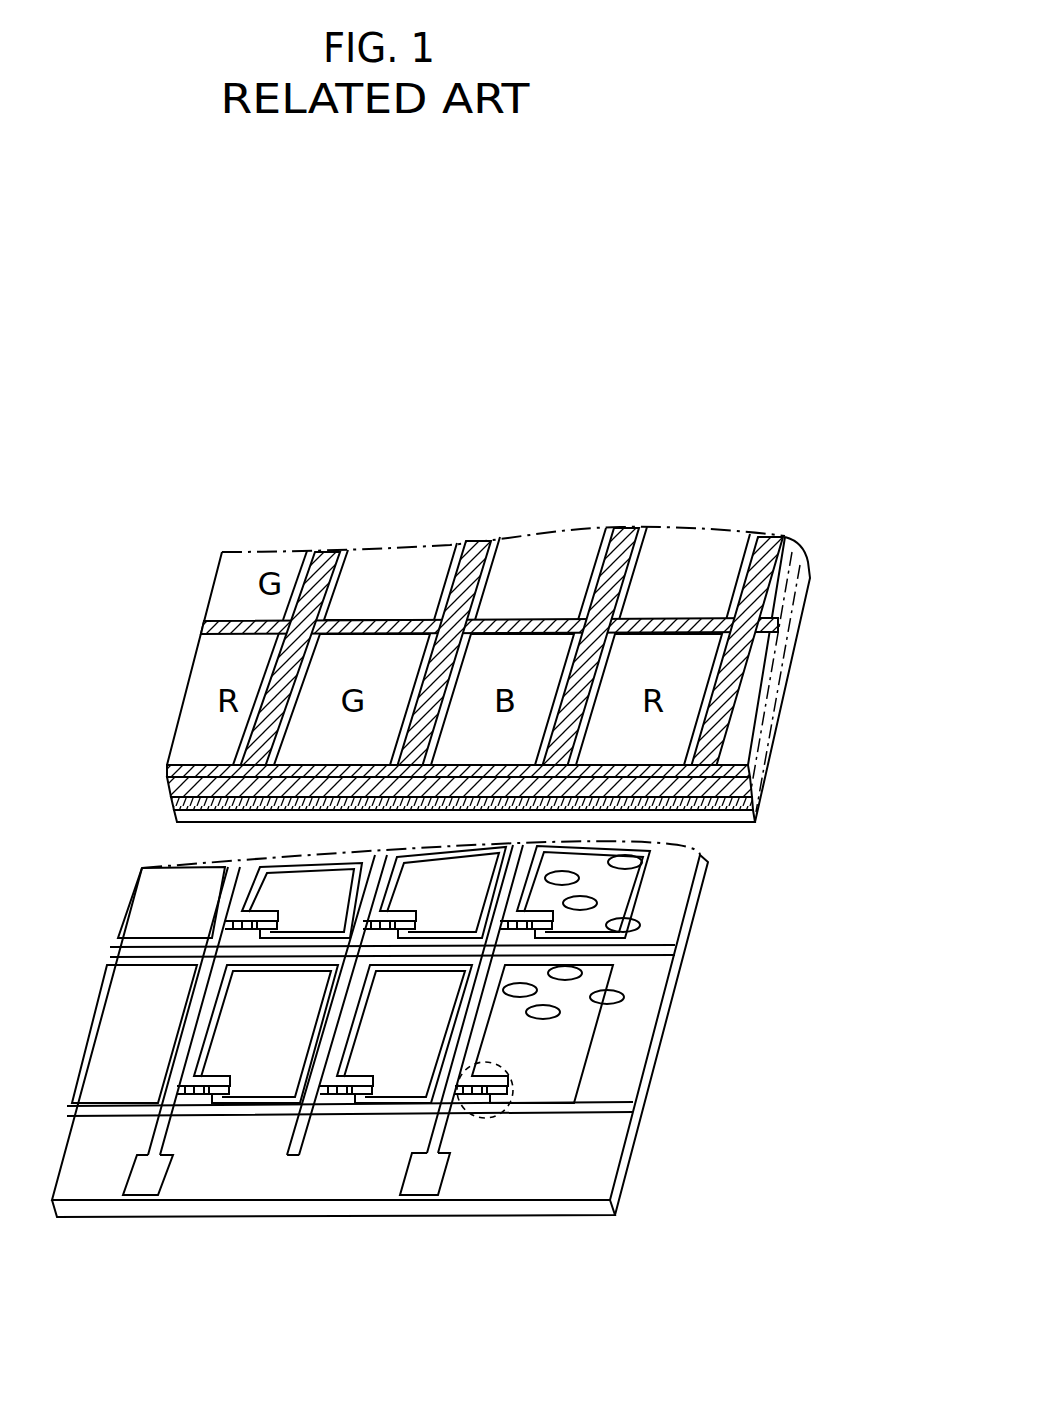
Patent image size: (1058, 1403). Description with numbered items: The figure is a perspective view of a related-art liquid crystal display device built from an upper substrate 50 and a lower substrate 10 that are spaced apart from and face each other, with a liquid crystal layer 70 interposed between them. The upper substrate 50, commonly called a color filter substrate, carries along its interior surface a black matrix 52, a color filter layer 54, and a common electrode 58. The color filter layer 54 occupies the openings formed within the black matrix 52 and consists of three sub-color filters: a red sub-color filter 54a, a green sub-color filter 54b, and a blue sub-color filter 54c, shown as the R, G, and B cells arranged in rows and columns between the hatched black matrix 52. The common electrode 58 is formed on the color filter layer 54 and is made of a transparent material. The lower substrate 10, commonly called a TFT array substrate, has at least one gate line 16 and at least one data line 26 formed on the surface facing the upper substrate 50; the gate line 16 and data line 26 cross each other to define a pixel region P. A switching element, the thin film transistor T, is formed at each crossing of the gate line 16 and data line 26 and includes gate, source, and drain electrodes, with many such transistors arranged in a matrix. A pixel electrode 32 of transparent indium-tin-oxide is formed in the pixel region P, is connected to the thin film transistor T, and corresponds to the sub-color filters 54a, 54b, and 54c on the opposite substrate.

The color filter layer 54 is at (395, 378).
The red sub-color filter 54a is at (542, 557).
The green sub-color filter 54b is at (687, 557).
The blue sub-color filter 54c is at (403, 557).
The black matrix 52 is at (782, 627).
The upper substrate 50 is at (173, 786).
The common electrode 58 is at (740, 812).
The liquid crystal layer 70 is at (622, 924).
The pixel region P is at (627, 1032).
The pixel electrode 32 is at (583, 1073).
The gate line 16 is at (588, 1113).
The thin film transistor T is at (497, 1116).
The lower substrate 10 is at (575, 1208).
The data line 26 is at (423, 1145).